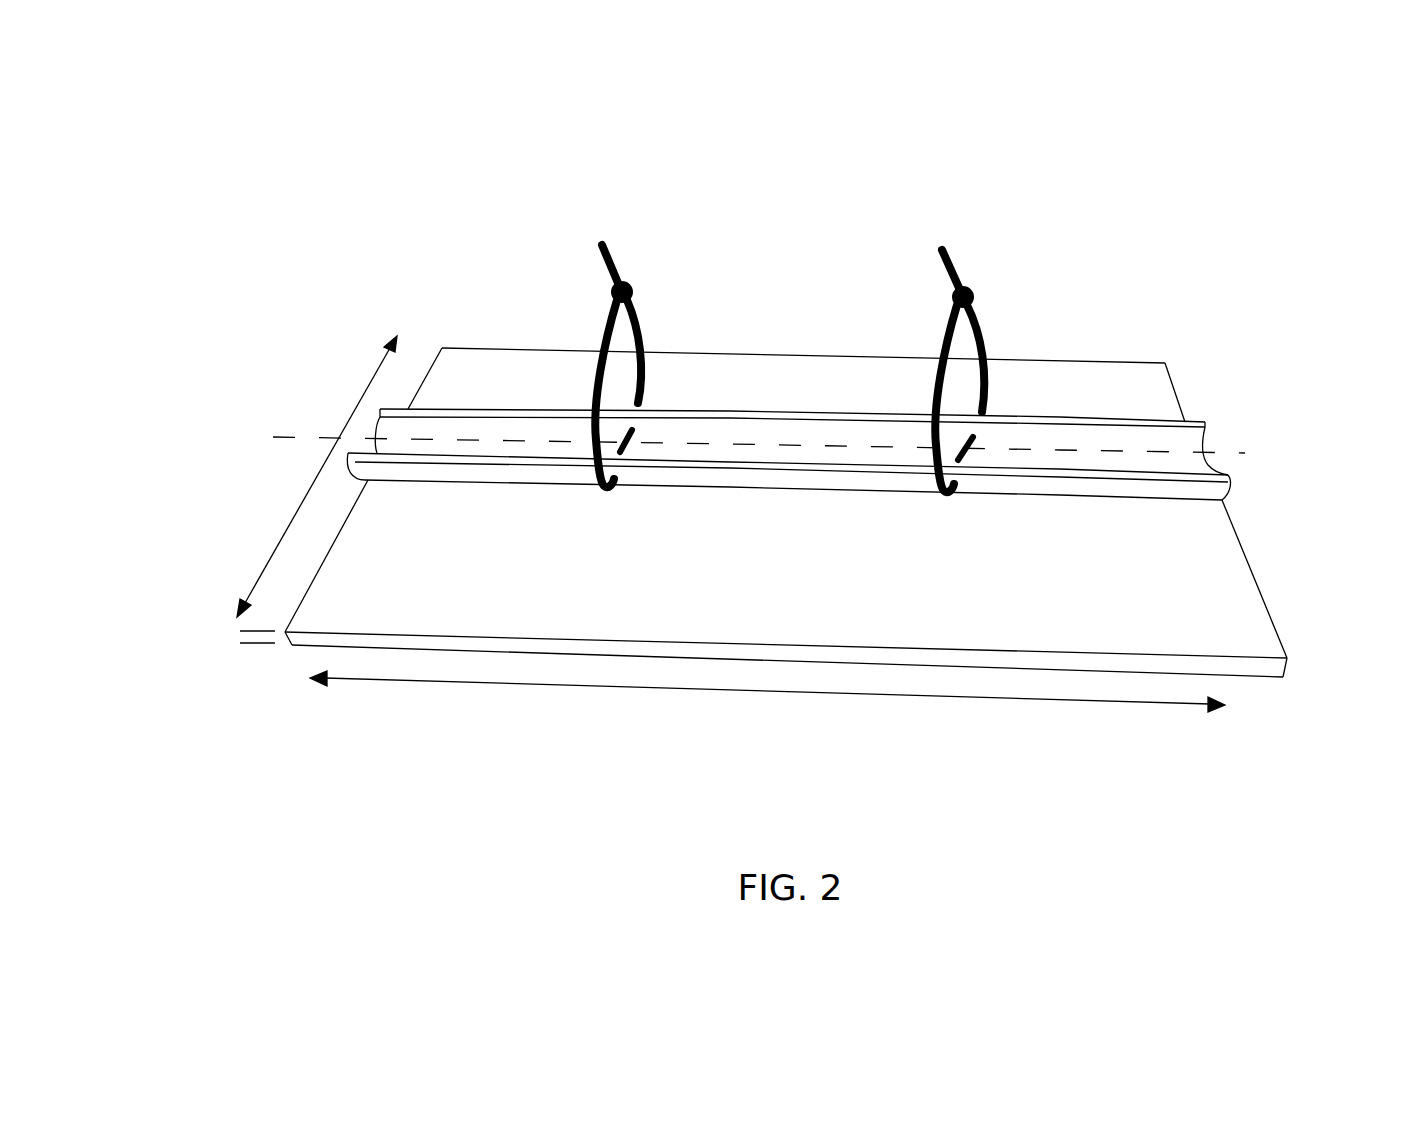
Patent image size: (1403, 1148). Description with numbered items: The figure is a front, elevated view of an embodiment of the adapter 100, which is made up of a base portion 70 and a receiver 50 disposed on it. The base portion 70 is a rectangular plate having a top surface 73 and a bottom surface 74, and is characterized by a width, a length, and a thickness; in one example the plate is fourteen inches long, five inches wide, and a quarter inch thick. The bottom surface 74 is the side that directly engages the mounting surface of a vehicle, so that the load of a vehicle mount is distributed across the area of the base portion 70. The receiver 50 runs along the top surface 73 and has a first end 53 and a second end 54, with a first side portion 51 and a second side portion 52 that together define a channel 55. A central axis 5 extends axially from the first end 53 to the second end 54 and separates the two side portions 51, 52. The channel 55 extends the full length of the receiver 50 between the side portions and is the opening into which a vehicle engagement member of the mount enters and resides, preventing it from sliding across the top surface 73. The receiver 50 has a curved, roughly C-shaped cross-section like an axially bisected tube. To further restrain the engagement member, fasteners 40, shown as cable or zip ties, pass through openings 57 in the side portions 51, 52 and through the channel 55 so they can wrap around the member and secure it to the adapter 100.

The adapter 100 is at (347, 238).
The central axis 5 is at (290, 437).
The fastener 40 is at (633, 312).
The receiver 50 is at (1173, 423).
The first side portion 51 is at (490, 423).
The second side portion 52 is at (396, 465).
The first end 53 is at (347, 403).
The second end 54 is at (1222, 442).
The channel 55 is at (458, 440).
The opening 57 is at (615, 483).
The base portion 70 is at (1255, 638).
The top surface 73 is at (1218, 548).
The bottom surface 74 is at (1237, 673).